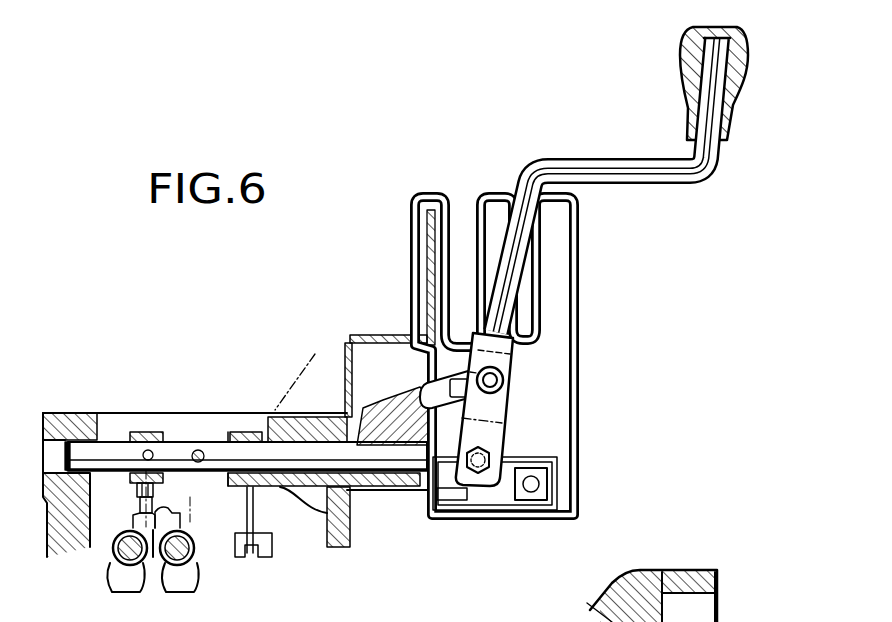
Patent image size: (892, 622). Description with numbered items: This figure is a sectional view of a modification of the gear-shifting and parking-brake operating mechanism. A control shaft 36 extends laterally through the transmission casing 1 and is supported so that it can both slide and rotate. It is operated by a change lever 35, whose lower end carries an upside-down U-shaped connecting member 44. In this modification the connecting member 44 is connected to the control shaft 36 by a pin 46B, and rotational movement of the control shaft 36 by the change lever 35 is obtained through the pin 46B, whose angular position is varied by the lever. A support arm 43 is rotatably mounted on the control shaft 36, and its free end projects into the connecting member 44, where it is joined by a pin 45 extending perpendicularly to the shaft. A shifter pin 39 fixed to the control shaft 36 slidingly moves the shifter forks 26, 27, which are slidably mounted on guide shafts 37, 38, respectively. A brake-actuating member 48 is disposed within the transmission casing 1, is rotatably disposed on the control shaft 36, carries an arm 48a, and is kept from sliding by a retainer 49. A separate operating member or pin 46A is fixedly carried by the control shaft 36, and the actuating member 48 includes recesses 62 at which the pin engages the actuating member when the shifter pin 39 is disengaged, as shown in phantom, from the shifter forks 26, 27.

The transmission casing 1 is at (57, 412).
The shifter fork 26 is at (120, 580).
The shifter fork 27 is at (204, 580).
The change lever 35 is at (700, 120).
The control shaft 36 is at (172, 444).
The guide shaft 37 is at (114, 538).
The guide shaft 38 is at (185, 534).
The shifter pin 39 is at (142, 410).
The support arm 43 is at (428, 390).
The connecting member 44 is at (505, 412).
The pin 45 is at (505, 372).
The operating member or pin 46A is at (180, 507).
The pin 46B is at (490, 497).
The brake-actuating member 48 is at (258, 412).
The arm 48a is at (257, 500).
The retainer 49 is at (304, 367).
The recesses 62 is at (226, 445).